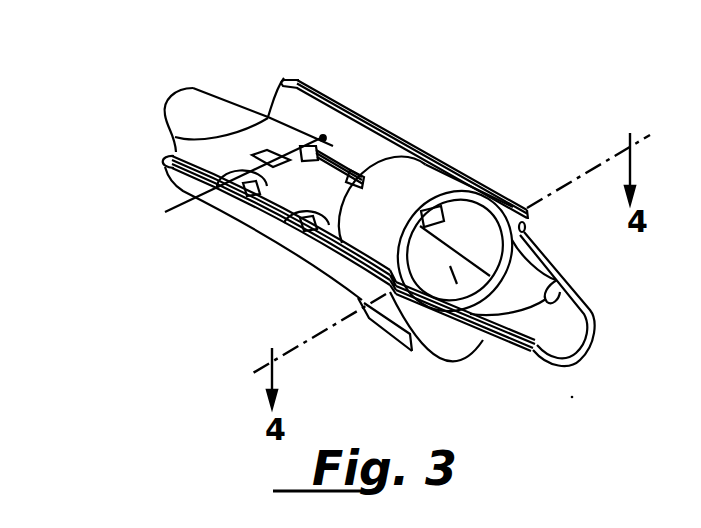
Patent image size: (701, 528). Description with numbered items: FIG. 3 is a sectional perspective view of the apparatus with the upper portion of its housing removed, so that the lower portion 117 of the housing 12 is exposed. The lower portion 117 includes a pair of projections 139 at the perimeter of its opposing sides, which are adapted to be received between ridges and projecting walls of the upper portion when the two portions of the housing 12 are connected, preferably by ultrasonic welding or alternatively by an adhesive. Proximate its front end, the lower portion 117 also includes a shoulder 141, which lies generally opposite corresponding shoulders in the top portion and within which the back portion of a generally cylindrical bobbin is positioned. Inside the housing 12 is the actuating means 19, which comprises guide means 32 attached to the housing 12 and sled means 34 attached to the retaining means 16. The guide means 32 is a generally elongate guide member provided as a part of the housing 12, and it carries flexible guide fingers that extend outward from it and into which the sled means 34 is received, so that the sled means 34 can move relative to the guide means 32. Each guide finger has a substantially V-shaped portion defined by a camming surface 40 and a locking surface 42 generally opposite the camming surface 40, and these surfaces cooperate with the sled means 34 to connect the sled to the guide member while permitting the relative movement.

The housing 12 is at (517, 203).
The retaining means 16 is at (410, 190).
The actuating means 19 is at (323, 137).
The guide means 32 is at (340, 170).
The sled means 34 is at (457, 302).
The camming surface 40 is at (175, 137).
The locking surface 42 is at (285, 220).
The lower portion 117 is at (509, 346).
The projections 139 is at (300, 79).
The shoulder 141 is at (553, 279).